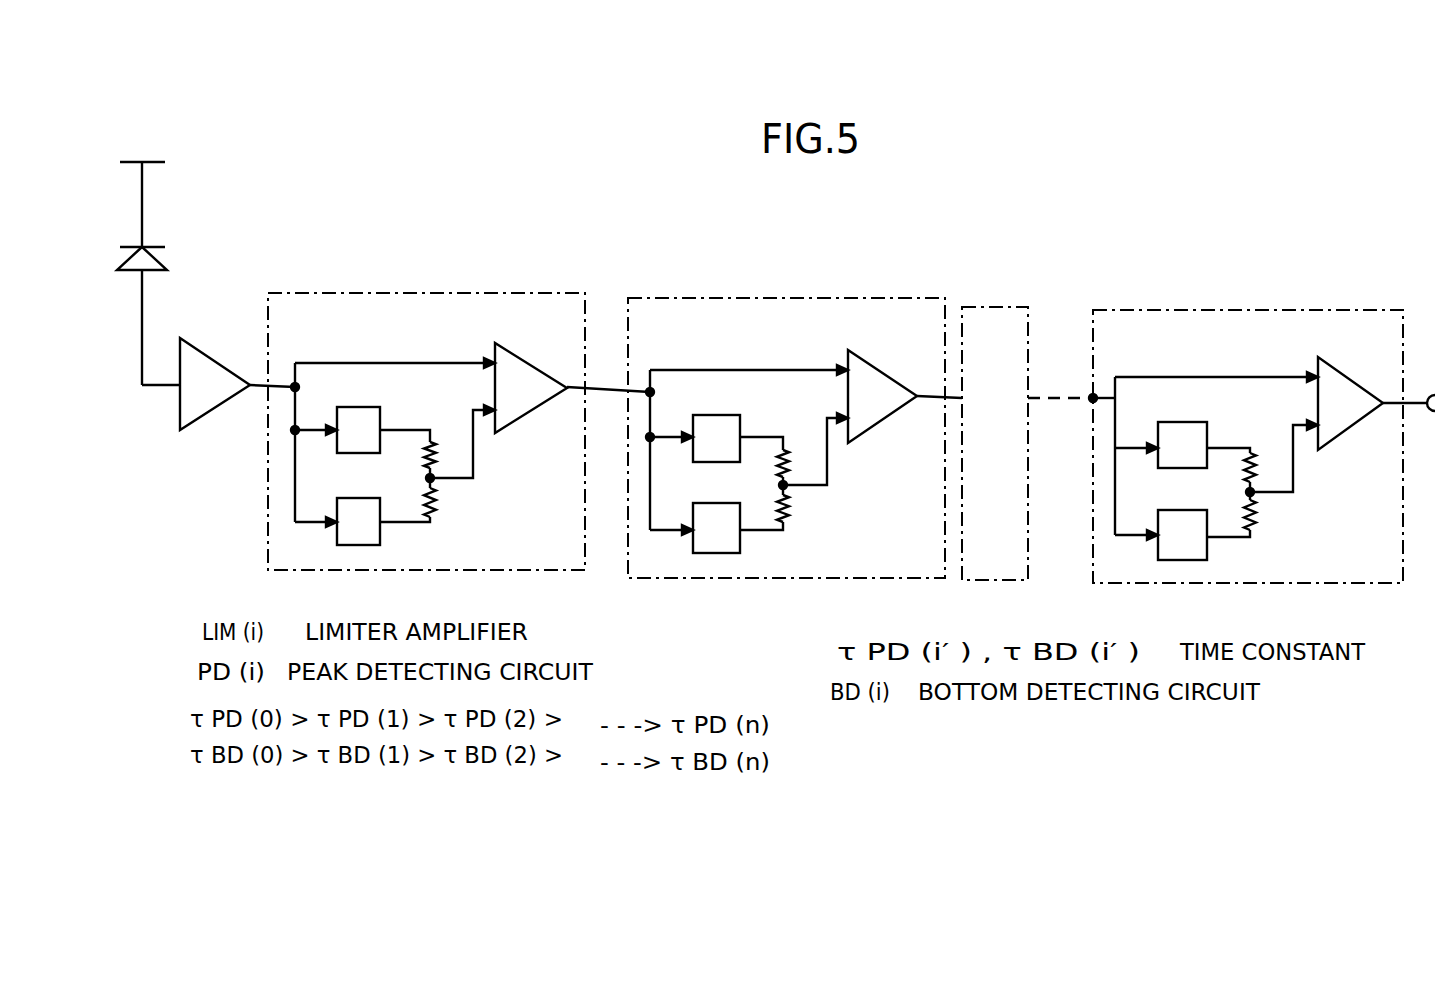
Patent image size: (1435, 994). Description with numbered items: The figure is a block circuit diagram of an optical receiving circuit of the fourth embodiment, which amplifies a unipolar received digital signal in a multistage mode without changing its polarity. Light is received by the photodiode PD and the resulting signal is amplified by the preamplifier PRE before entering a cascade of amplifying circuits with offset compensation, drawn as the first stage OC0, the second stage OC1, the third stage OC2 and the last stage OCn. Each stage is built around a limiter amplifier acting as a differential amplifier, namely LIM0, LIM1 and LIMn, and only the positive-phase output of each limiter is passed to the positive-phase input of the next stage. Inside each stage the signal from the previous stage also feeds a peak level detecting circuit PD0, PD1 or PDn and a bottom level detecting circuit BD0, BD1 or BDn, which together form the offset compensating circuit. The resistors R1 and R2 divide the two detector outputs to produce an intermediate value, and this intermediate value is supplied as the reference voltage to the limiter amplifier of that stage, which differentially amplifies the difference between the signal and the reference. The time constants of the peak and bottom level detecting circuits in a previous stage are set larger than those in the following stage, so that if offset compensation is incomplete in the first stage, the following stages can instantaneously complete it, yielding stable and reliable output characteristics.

The photodiode PD is at (147, 263).
The preamplifier PRE is at (208, 400).
The amplifying circuit OC(0) OC0 is at (362, 290).
The amplifying circuit OC(1) OC1 is at (720, 296).
The amplifying circuit OC(2) OC2 is at (997, 305).
The amplifying circuit OC(n) OCn is at (1187, 308).
The limiter amplifier LIM(0) LIM0 is at (513, 372).
The limiter amplifier LIM(1) LIM1 is at (873, 370).
The limiter amplifier LIM(n) LIMn is at (1343, 390).
The peak level detecting circuit PD(0) PD0 is at (358, 422).
The peak level detecting circuit PD(1) PD1 is at (718, 432).
The peak level detecting circuit PD(n) PDn is at (1183, 433).
The bottom level detecting circuit BD(0) BD0 is at (370, 537).
The bottom level detecting circuit BD(1) BD1 is at (718, 543).
The bottom level detecting circuit BD(n) BDn is at (1187, 547).
The resistor R1 is at (859, 462).
The resistor R2 is at (859, 509).